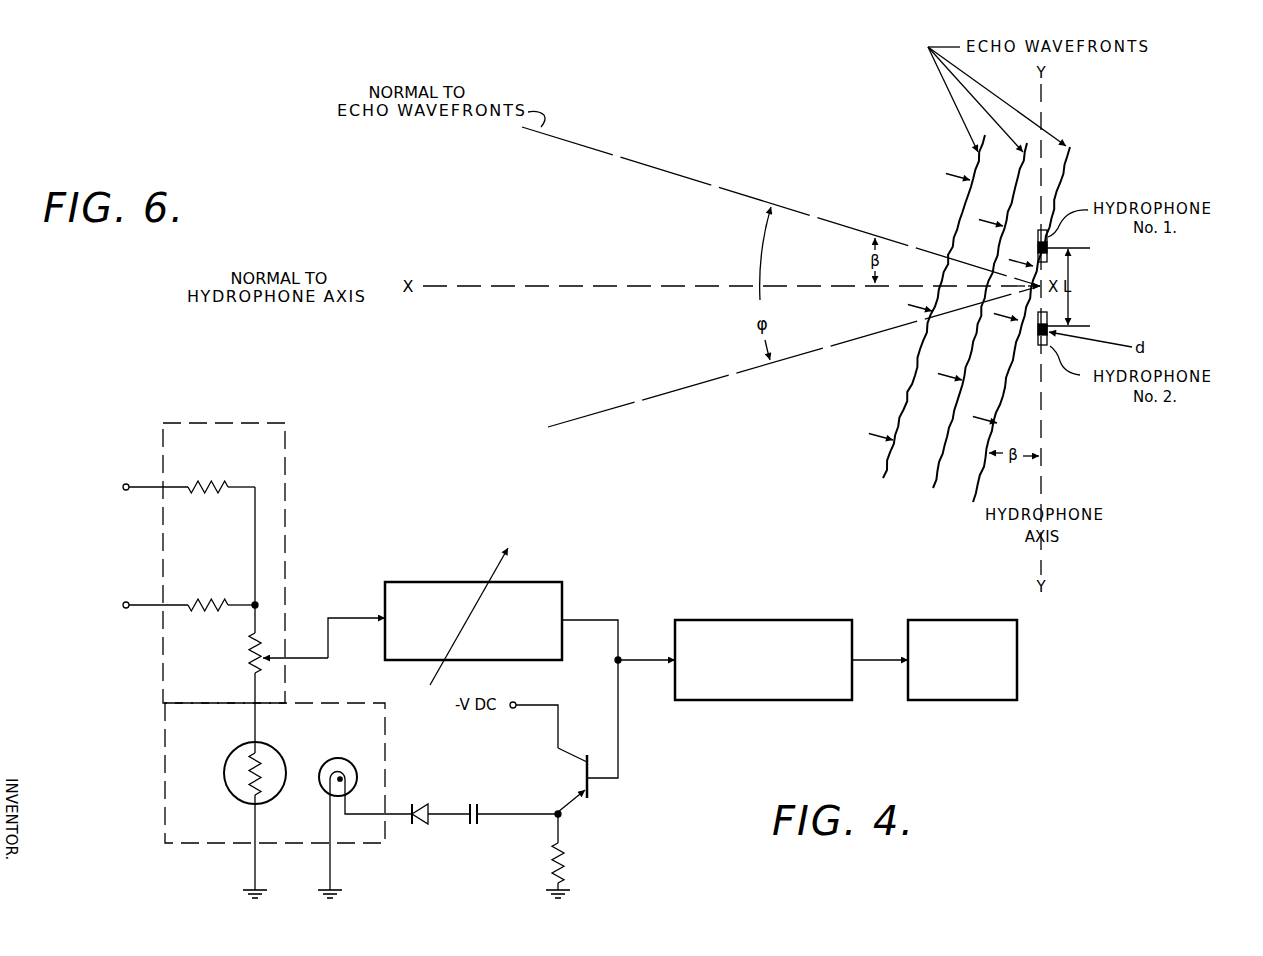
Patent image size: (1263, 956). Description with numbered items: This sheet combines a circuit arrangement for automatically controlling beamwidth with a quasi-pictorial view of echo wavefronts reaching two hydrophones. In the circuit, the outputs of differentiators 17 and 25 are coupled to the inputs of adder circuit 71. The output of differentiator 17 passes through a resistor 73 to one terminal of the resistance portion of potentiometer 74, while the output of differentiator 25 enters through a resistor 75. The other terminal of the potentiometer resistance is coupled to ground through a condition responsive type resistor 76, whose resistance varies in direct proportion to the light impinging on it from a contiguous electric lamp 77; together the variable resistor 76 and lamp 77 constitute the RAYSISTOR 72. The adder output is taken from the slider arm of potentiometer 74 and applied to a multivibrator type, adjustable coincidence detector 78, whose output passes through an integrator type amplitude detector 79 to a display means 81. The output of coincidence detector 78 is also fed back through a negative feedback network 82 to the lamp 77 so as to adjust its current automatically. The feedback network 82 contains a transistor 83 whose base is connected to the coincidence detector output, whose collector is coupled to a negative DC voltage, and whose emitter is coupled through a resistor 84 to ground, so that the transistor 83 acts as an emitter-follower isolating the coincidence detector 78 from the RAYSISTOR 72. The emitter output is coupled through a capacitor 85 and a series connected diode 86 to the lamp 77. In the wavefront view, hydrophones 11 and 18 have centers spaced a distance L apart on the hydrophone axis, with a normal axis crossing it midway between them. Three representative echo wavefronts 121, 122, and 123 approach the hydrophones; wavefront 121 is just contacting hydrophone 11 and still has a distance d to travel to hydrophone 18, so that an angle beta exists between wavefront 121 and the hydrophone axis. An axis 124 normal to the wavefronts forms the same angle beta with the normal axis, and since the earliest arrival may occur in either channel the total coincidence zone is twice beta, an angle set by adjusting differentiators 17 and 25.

In FIG. 6, the hydrophone 11 is at (1037, 241).
In FIG. 6, the hydrophone 18 is at (1037, 346).
In FIG. 6, the echo wavefront 121 is at (979, 498).
In FIG. 6, the echo wavefront 122 is at (933, 484).
In FIG. 6, the echo wavefront 123 is at (884, 468).
In FIG. 6, the axis normal to the wavefronts 124 is at (808, 217).
In FIG. 4, the differentiator 17 is at (67, 497).
In FIG. 4, the differentiator 25 is at (67, 614).
In FIG. 4, the adder circuit 71 is at (288, 508).
In FIG. 4, the RAYSISTOR 72 is at (165, 737).
In FIG. 4, the resistor 73 is at (210, 480).
In FIG. 4, the potentiometer 74 is at (248, 651).
In FIG. 4, the resistor 75 is at (207, 610).
In FIG. 4, the condition responsive type resistor 76 is at (237, 752).
In FIG. 4, the electric lamp 77 is at (321, 798).
In FIG. 4, the coincidence detector 78 is at (430, 582).
In FIG. 4, the amplitude detector 79 is at (727, 620).
In FIG. 4, the display means 81 is at (943, 620).
In FIG. 4, the negative feedback network 82 is at (622, 827).
In FIG. 4, the transistor 83 is at (588, 759).
In FIG. 4, the resistor 84 is at (550, 858).
In FIG. 4, the capacitor 85 is at (479, 804).
In FIG. 4, the diode 86 is at (422, 801).